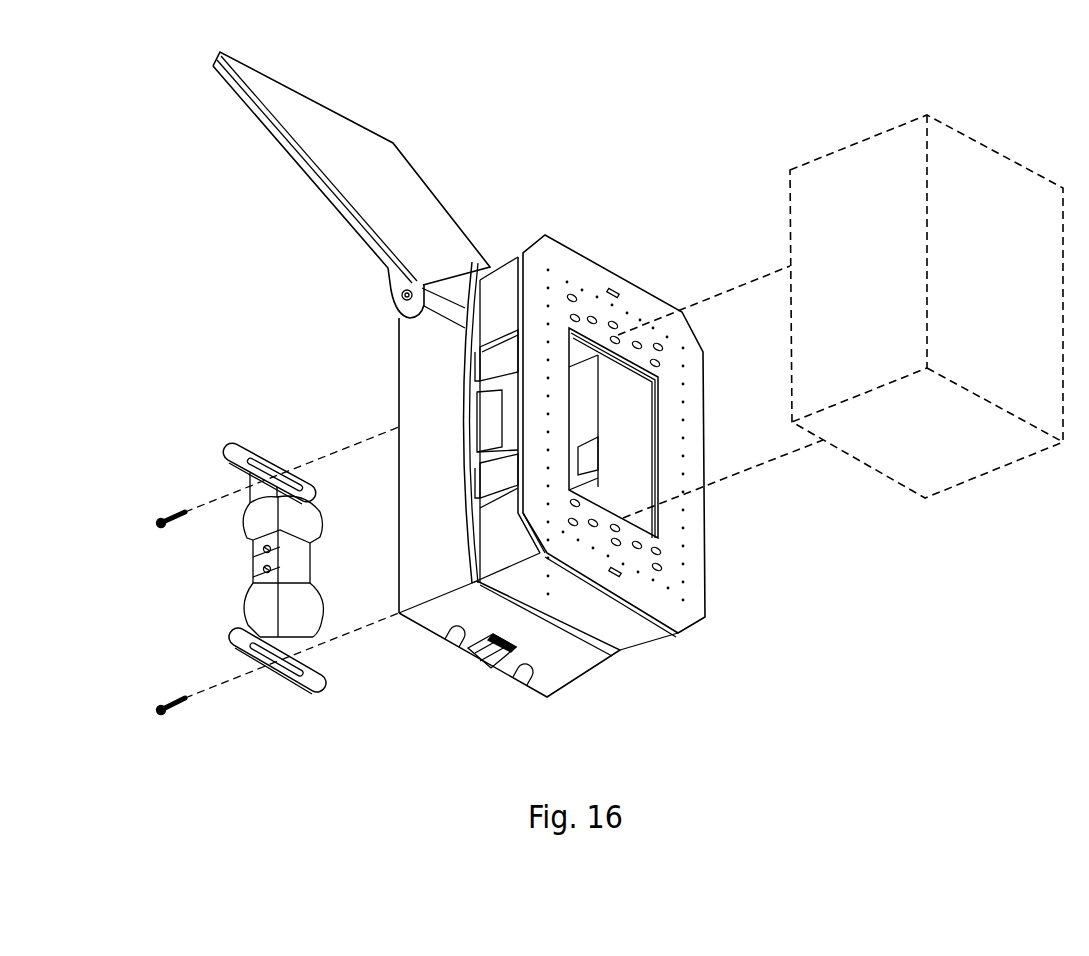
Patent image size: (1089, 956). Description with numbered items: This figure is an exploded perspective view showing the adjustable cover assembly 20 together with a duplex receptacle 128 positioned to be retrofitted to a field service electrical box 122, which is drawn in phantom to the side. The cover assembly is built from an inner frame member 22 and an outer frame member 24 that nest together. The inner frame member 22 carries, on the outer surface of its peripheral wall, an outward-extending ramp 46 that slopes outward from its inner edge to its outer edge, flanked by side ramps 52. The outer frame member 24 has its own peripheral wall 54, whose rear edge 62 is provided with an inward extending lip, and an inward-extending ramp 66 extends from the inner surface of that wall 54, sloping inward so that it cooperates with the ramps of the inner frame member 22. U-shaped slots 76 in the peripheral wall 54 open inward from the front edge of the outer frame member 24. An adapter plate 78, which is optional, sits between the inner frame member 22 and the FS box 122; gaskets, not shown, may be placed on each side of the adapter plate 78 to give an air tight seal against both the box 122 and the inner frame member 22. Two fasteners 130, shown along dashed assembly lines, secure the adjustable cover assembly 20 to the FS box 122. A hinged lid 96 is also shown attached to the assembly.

The adjustable cover assembly 20 is at (630, 207).
The inner frame member 22 is at (637, 640).
The outer frame member 24 is at (583, 683).
The outward-extending ramp 46 is at (499, 428).
The side ramps 52 is at (512, 366).
The peripheral wall 54 is at (445, 439).
The rear edge 62 is at (599, 392).
The inward-extending ramp 66 is at (587, 453).
The U-shaped slots 76 is at (448, 633).
The adapter plate 78 is at (697, 625).
The hinged lid 96 is at (384, 179).
The field service electrical box 122 is at (857, 142).
The duplex receptacle 128 is at (250, 447).
The fasteners 130 is at (168, 517).